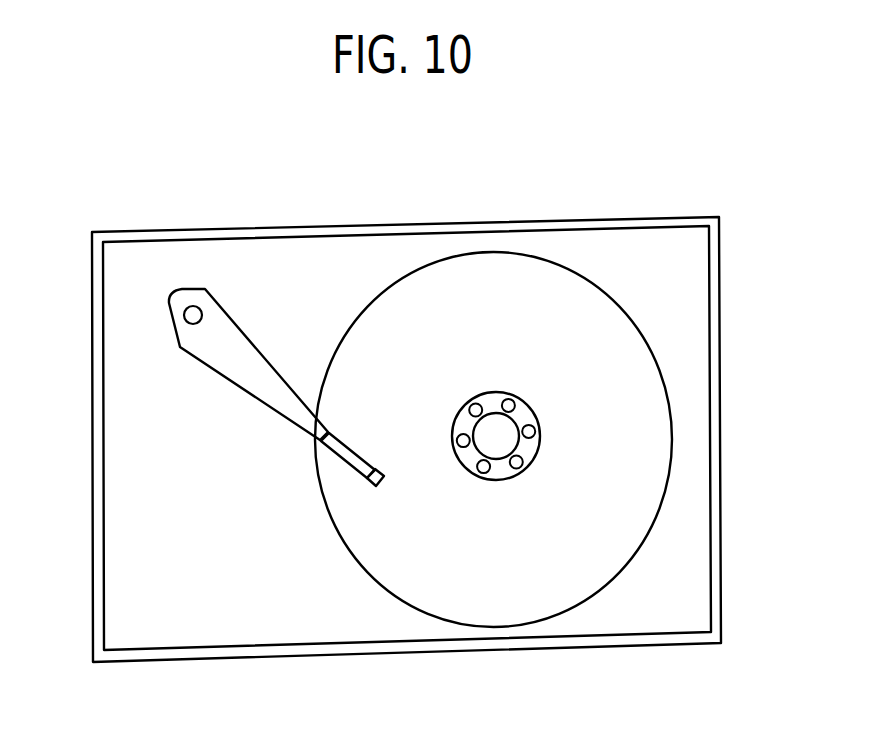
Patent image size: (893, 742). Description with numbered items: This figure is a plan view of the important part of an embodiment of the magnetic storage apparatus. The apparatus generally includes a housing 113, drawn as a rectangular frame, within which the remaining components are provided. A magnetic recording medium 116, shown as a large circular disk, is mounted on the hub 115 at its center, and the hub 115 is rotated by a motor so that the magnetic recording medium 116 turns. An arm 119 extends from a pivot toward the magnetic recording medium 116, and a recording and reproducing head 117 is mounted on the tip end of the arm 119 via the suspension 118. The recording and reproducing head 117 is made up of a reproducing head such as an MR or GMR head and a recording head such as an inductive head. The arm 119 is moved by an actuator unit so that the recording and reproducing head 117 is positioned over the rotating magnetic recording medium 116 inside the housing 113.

The housing 113 is at (717, 623).
The hub 115 is at (527, 412).
The magnetic recording medium 116 is at (543, 270).
The recording and reproducing head 117 is at (383, 468).
The suspension 118 is at (347, 440).
The arm 119 is at (223, 379).